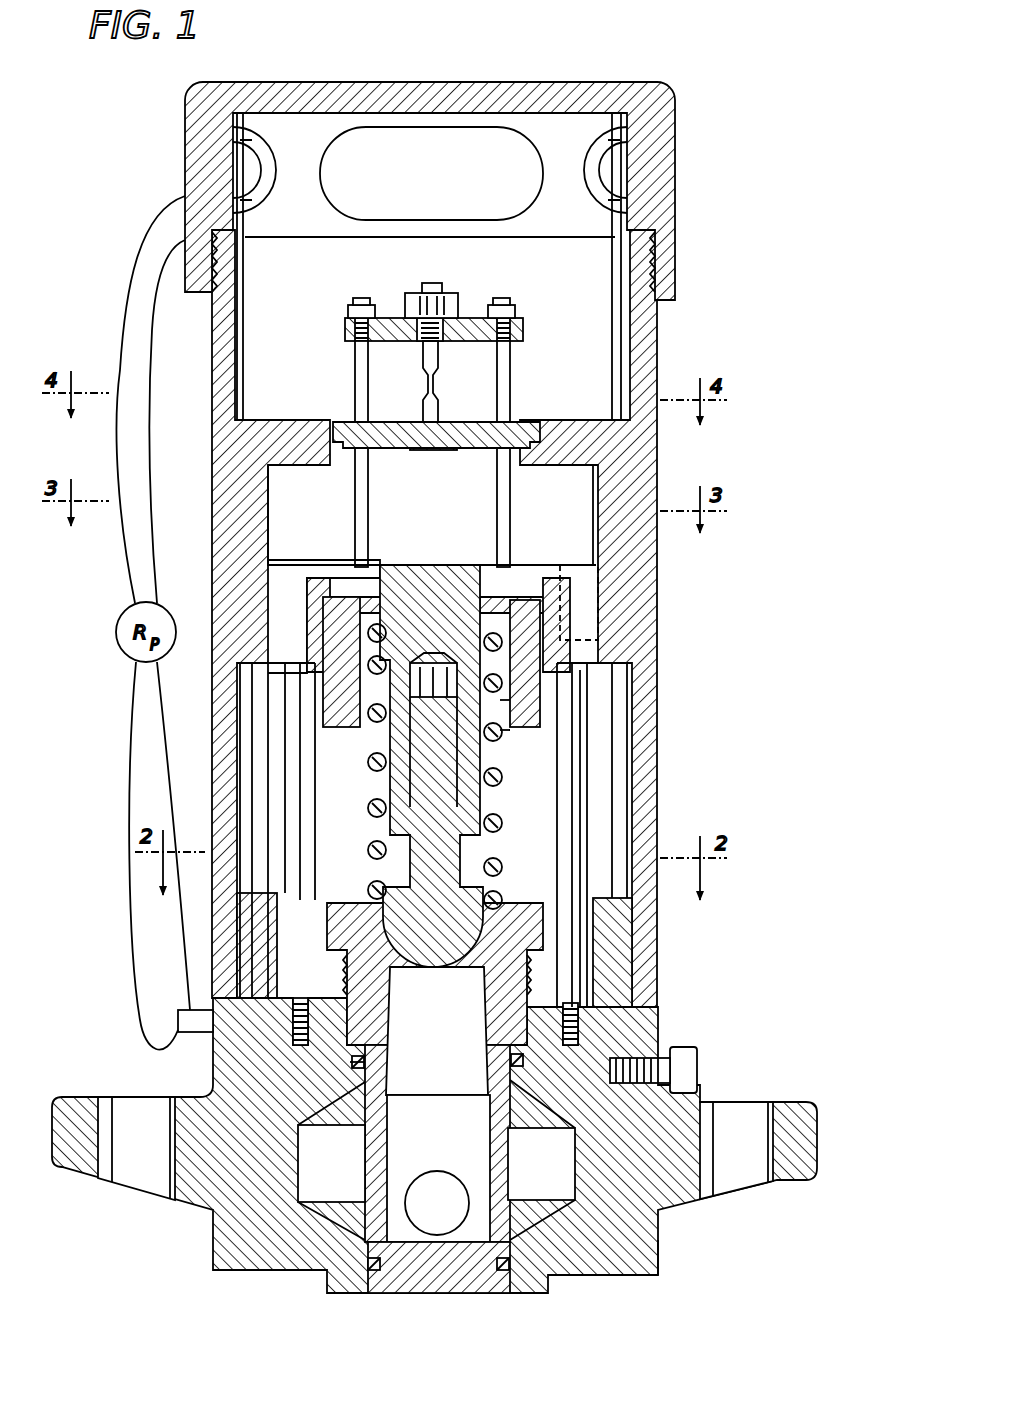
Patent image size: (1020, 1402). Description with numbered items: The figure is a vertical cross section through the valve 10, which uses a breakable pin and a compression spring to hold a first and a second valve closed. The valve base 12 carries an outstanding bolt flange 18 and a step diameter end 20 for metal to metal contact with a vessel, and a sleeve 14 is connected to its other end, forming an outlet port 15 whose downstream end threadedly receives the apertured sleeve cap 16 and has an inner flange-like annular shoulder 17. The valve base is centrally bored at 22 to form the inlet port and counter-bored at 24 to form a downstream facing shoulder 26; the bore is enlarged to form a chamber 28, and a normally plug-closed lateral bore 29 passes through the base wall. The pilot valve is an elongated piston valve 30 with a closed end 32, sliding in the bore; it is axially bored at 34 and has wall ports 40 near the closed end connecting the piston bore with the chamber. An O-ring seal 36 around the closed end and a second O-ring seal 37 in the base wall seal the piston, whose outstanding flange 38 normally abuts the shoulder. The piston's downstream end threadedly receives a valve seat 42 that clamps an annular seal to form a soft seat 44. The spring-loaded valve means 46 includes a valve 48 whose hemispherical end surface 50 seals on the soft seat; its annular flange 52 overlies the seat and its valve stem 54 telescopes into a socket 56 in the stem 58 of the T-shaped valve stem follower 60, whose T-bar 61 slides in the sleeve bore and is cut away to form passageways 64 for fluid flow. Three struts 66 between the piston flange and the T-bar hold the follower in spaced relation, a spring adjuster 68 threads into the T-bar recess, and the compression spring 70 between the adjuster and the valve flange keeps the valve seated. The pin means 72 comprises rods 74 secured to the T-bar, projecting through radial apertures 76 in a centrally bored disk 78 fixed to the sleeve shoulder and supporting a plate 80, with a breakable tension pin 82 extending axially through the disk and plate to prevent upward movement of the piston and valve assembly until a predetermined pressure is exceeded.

The valve 10 is at (712, 578).
The valve base 12 is at (672, 1206).
The sleeve 14 is at (660, 652).
The outlet port 15 is at (600, 285).
The sleeve cap 16 is at (680, 178).
The annular shoulder 17 is at (545, 422).
The bolt flange 18 is at (745, 1102).
The step diameter end 20 is at (330, 1283).
The valve base bore 22 is at (575, 1280).
The counter-bore 24 is at (600, 905).
The shoulder 26 is at (600, 985).
The chamber 28 is at (662, 1250).
The lateral bore 29 is at (550, 1128).
The piston valve 30 is at (353, 1173).
The closed end 32 is at (452, 1283).
The piston bore 34 is at (392, 1148).
The O-ring seal 36 is at (376, 1292).
The second O-ring seal 37 is at (350, 1062).
The piston flange 38 is at (590, 1030).
The wall ports 40 is at (492, 1185).
The valve seat 42 is at (585, 935).
The soft seat 44 is at (435, 968).
The spring-loaded valve means 46 is at (515, 777).
The valve 48 is at (432, 985).
The hemispherical end surface 50 is at (330, 1010).
The annular flange 52 is at (340, 880).
The valve stem 54 is at (395, 830).
The socket 56 is at (490, 830).
The follower stem 58 is at (405, 790).
The valve stem follower 60 is at (303, 547).
The T-bar 61 is at (575, 615).
The passageways 64 is at (290, 600).
The struts 66 is at (290, 718).
The spring adjuster 68 is at (540, 745).
The compression spring 70 is at (500, 795).
The pin means 72 is at (332, 363).
The rods 74 is at (355, 398).
The radial apertures 76 is at (388, 425).
The disk 78 is at (473, 423).
The plate 80 is at (386, 316).
The breakable tension pin 82 is at (437, 284).